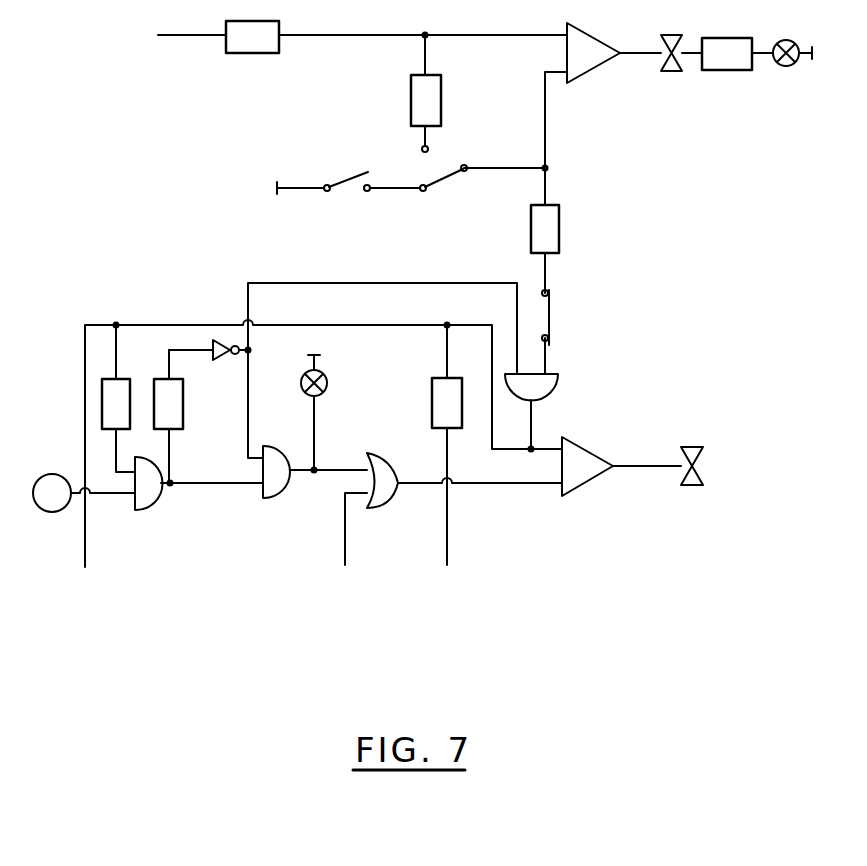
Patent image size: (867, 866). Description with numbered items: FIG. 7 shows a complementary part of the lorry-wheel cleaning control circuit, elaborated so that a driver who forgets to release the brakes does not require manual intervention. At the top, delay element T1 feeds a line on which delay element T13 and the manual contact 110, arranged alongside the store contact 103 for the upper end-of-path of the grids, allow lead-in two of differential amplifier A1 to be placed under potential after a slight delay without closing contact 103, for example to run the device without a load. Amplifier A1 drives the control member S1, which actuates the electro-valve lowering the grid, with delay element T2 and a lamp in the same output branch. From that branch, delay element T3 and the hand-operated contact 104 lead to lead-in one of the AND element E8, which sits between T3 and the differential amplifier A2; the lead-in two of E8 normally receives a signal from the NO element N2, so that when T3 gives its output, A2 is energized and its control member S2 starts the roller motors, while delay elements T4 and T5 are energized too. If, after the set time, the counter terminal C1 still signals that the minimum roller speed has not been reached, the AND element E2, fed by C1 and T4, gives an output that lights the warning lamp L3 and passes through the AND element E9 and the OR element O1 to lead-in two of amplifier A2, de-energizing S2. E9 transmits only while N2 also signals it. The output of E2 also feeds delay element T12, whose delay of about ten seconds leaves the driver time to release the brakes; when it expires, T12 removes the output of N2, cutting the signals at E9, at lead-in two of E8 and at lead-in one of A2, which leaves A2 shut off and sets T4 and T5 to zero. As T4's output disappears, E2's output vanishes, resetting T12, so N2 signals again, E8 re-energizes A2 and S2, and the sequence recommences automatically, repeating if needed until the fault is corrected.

The delay element T1 is at (252, 37).
The delay element T2 is at (727, 54).
The delay element T13 is at (428, 92).
The differential amplifier A1 is at (588, 48).
The control member S1 is at (676, 76).
The contact 103 is at (345, 178).
The contact 110 is at (446, 176).
The delay element T3 is at (552, 226).
The hand-operated contact 104 is at (550, 325).
The AND element E8 is at (548, 383).
The delay element T5 is at (433, 410).
The differential amplifier A2 is at (580, 480).
The control member S2 is at (705, 478).
The delay element T4 is at (118, 392).
The delay element T12 is at (174, 420).
The NO element N2 is at (208, 372).
The lamp L3 is at (327, 386).
The counter output terminal C1 is at (52, 493).
The AND element E2 is at (150, 490).
The AND element E9 is at (280, 480).
The OR element O1 is at (390, 492).